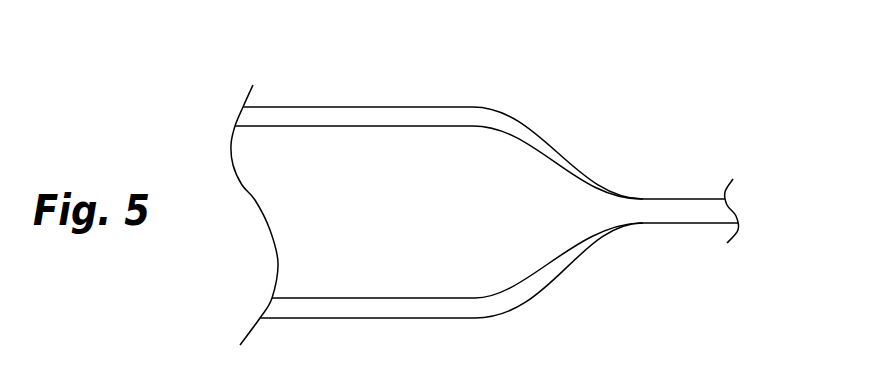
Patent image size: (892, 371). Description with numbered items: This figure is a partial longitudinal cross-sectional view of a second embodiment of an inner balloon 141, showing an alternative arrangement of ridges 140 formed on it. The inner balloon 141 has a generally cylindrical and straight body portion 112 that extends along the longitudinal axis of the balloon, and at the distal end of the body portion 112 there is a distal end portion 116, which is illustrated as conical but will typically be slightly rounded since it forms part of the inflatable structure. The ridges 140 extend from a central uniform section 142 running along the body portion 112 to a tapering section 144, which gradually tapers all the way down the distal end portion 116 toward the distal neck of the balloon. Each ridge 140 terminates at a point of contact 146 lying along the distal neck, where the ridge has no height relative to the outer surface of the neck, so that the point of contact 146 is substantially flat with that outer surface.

The ridges 140 is at (425, 108).
The central uniform section 142 is at (298, 117).
The tapering section 144 is at (498, 118).
The inner balloon 141 is at (527, 182).
The point of contact 146 is at (645, 198).
The body portion 112 is at (390, 227).
The distal end portion 116 is at (575, 225).